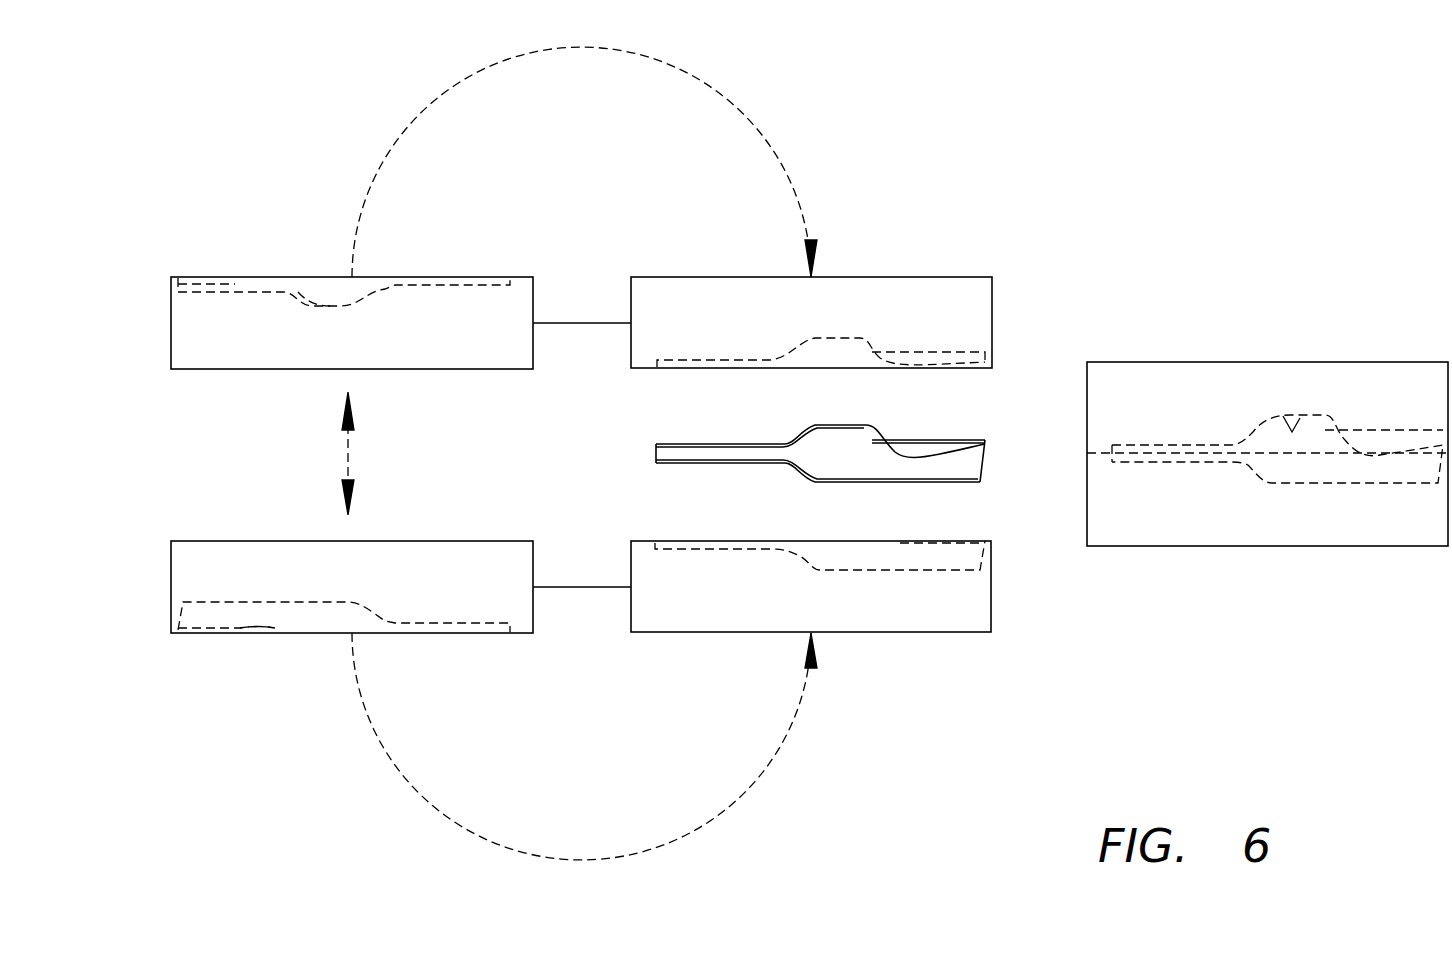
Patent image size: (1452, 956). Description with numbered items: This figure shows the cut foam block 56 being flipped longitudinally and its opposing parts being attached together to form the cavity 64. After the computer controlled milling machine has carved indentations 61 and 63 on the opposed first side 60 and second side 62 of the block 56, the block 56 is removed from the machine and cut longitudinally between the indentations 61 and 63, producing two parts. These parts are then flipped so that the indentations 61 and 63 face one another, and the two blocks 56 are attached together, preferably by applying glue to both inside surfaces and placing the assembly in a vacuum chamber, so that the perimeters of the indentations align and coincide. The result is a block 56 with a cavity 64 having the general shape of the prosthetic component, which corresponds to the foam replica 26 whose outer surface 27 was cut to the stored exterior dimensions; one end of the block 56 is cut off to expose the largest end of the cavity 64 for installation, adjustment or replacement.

The foam replica 26 is at (962, 484).
The outer surface 27 is at (862, 469).
The foam block 56 is at (232, 541).
The first side 60 is at (522, 277).
The indentation 61 is at (313, 300).
The second side 62 is at (522, 633).
The indentation 63 is at (250, 603).
The cavity 64 is at (1292, 428).